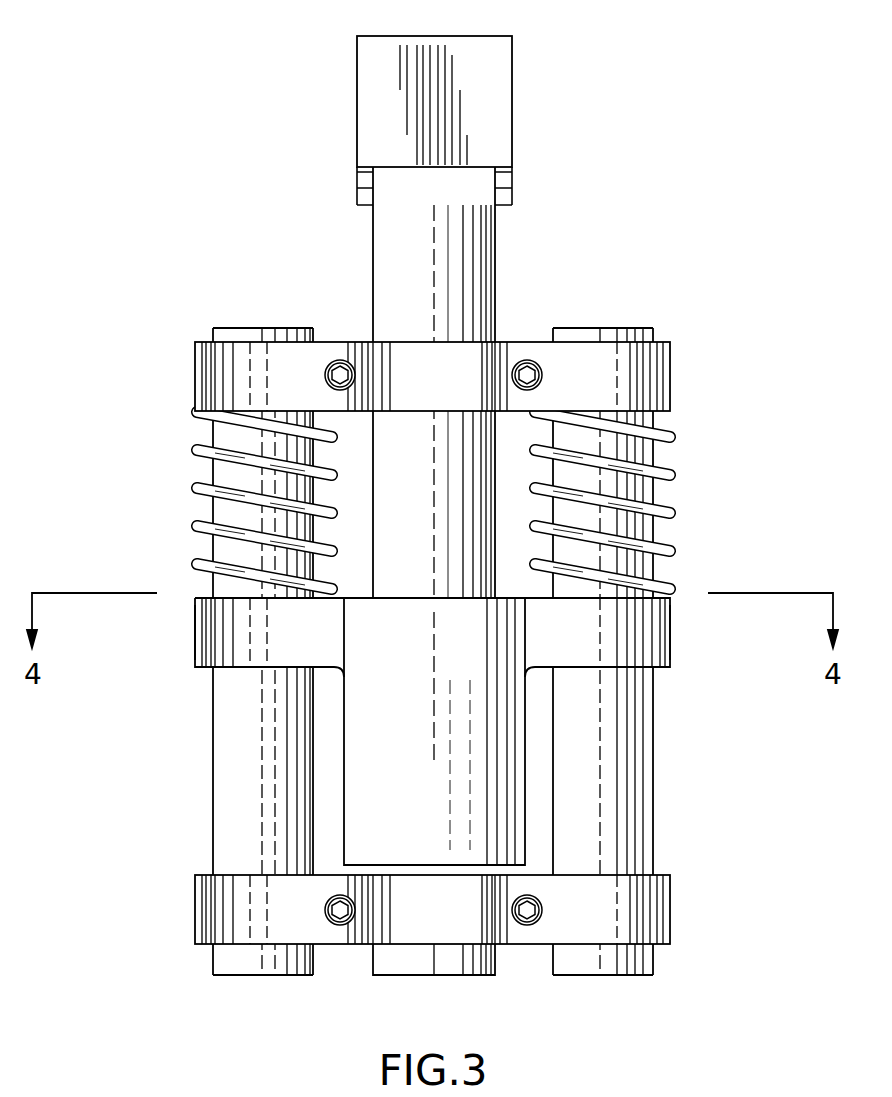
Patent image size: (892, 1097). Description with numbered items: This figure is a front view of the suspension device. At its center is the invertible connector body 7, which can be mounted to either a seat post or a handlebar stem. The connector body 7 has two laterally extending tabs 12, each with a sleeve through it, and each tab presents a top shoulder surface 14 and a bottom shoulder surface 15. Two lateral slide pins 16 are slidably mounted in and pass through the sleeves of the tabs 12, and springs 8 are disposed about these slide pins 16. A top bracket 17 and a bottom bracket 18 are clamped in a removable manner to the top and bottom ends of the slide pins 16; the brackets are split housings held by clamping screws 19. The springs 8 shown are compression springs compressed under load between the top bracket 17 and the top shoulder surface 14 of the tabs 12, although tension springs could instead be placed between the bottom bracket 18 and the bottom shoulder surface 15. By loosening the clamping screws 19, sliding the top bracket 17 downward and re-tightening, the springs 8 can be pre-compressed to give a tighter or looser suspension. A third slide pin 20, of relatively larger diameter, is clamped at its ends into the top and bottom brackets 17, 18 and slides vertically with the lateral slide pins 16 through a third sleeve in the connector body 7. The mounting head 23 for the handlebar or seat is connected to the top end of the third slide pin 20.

The invertible connector body 7 is at (421, 799).
The springs 8 is at (195, 483).
The laterally extending tabs 12 is at (195, 643).
The top shoulder surface 14 is at (670, 598).
The bottom shoulder surface 15 is at (612, 668).
The slide pins 16 is at (213, 788).
The top bracket 17 is at (670, 368).
The bottom bracket 18 is at (670, 917).
The clamping screws 19 is at (340, 360).
The third slide pin 20 is at (495, 282).
The mounting head 23 is at (512, 83).